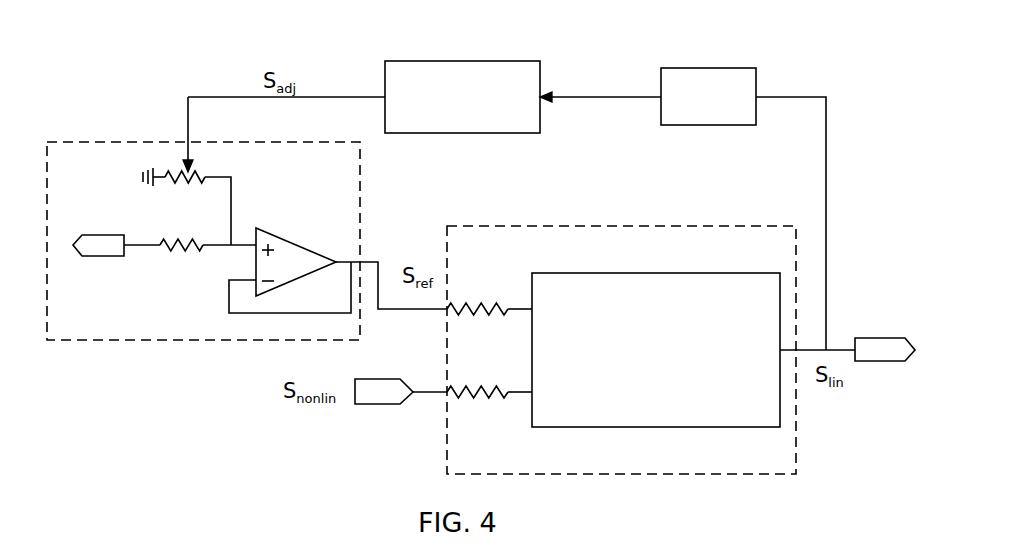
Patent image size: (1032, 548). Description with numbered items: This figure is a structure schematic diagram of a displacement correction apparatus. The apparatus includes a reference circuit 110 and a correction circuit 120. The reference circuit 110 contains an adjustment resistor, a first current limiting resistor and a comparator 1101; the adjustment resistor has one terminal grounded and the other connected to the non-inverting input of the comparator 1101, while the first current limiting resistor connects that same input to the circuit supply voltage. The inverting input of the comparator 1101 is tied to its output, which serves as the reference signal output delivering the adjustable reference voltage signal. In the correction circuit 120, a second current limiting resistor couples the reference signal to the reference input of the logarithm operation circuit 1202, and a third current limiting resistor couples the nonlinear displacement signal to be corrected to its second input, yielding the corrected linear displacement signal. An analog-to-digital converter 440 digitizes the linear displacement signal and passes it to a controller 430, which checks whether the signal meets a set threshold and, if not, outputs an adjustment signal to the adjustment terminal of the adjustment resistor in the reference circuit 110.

The reference circuit 110 is at (110, 142).
The comparator 1101 is at (272, 238).
The correction circuit 120 is at (508, 226).
The logarithm operation circuit 1202 is at (590, 273).
The controller 430 is at (441, 63).
The analog-to-digital converter 440 is at (703, 68).